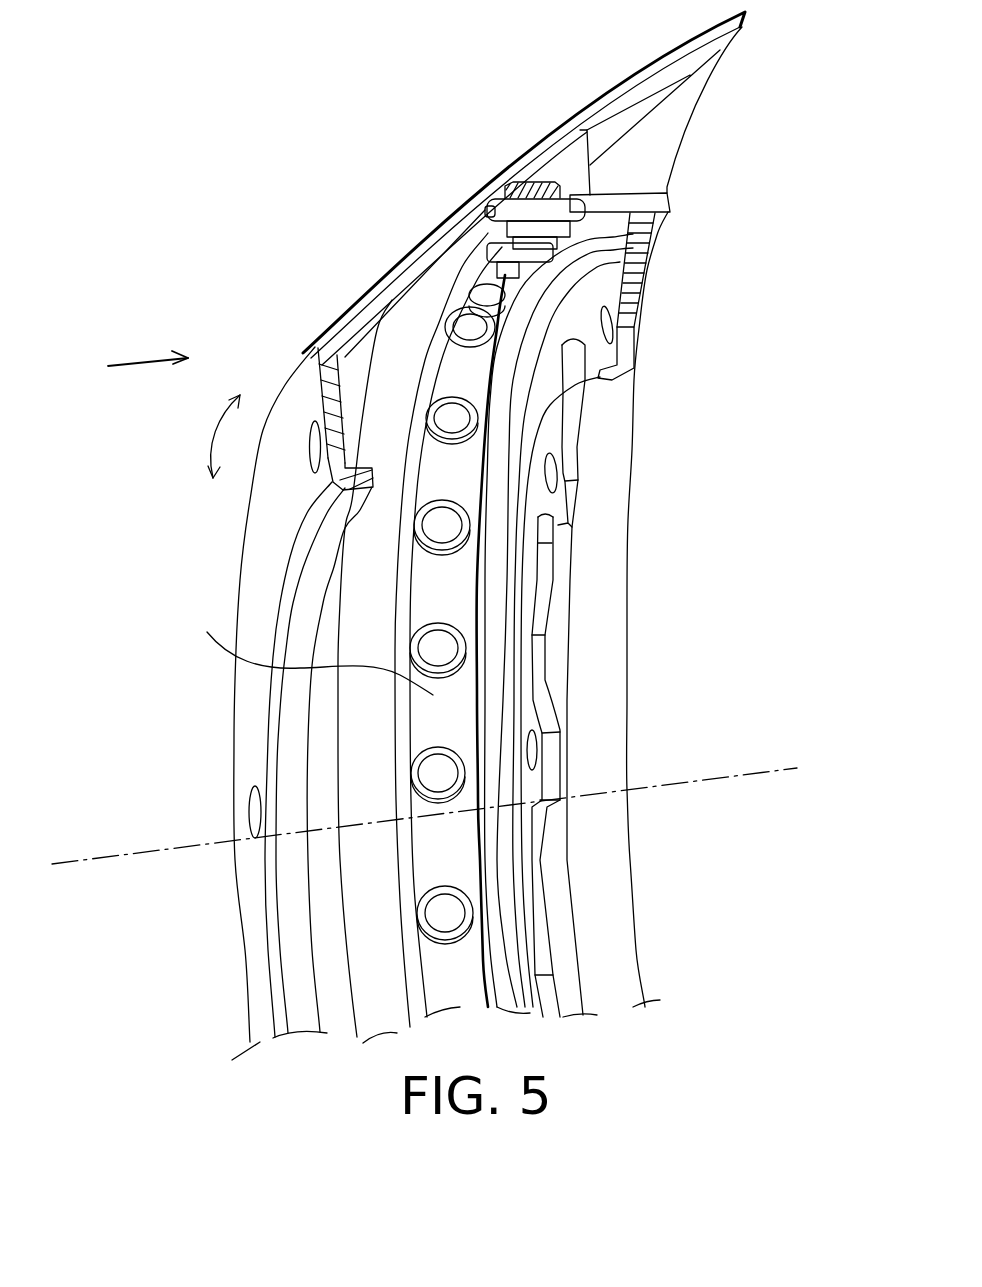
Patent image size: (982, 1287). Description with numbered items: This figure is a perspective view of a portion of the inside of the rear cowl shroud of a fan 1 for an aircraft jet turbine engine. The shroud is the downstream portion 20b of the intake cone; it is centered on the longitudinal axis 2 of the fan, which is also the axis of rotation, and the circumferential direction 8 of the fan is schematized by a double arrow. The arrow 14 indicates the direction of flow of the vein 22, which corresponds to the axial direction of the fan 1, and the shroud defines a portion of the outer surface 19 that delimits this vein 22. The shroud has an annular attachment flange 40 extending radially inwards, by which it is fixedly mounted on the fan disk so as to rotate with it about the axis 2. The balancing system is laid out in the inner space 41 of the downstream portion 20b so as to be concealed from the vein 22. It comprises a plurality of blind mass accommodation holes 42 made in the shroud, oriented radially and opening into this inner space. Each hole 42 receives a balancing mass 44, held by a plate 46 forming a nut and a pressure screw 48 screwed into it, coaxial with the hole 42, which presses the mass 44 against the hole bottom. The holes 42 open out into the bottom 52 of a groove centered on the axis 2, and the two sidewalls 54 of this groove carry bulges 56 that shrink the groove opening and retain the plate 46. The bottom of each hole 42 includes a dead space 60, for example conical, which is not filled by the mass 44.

The fan 1 is at (180, 268).
The longitudinal axis 2 is at (72, 860).
The circumferential direction 8 is at (217, 433).
The arrow 14 is at (148, 358).
The outer surface 19 is at (577, 110).
The downstream portion of the intake cone 20b is at (360, 227).
The vein 22 is at (479, 108).
The annular attachment flange 40 is at (555, 503).
The inner space 41 is at (382, 729).
The mass accommodation holes 42 is at (521, 175).
The balancing mass 44 is at (565, 196).
The plate 46 is at (657, 187).
The pressure screw 48 is at (583, 283).
The bottom of the groove 52 is at (305, 653).
The sidewalls 54 is at (492, 210).
The bulges 56 is at (470, 742).
The dead space 60 is at (516, 180).